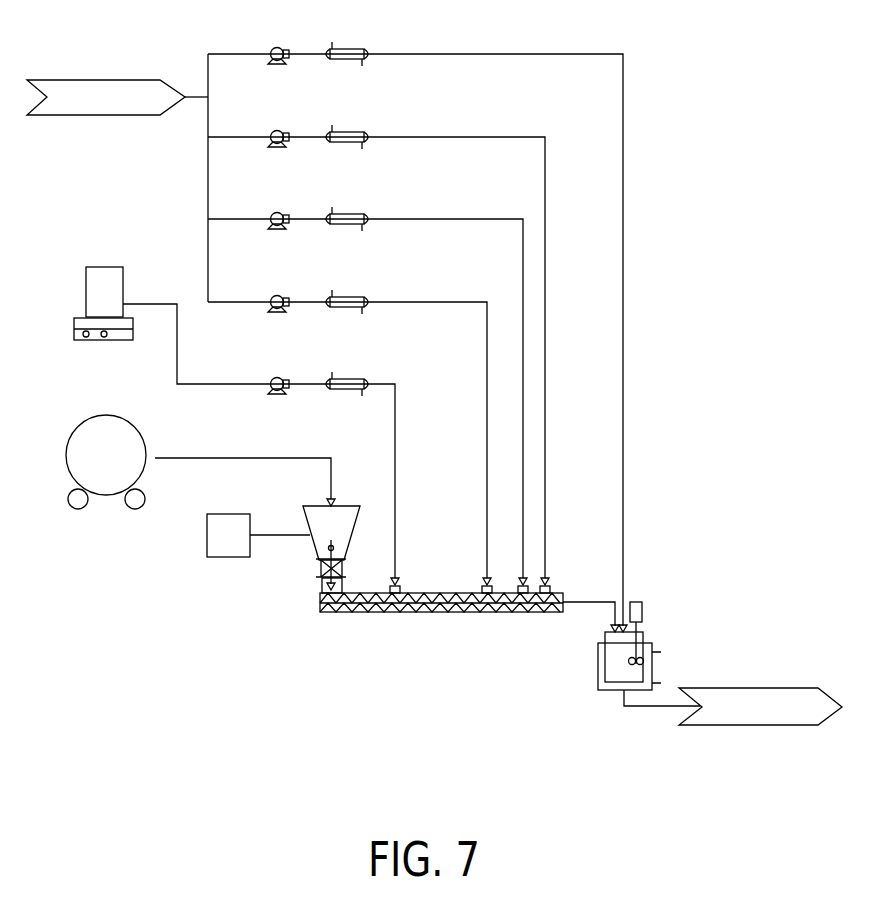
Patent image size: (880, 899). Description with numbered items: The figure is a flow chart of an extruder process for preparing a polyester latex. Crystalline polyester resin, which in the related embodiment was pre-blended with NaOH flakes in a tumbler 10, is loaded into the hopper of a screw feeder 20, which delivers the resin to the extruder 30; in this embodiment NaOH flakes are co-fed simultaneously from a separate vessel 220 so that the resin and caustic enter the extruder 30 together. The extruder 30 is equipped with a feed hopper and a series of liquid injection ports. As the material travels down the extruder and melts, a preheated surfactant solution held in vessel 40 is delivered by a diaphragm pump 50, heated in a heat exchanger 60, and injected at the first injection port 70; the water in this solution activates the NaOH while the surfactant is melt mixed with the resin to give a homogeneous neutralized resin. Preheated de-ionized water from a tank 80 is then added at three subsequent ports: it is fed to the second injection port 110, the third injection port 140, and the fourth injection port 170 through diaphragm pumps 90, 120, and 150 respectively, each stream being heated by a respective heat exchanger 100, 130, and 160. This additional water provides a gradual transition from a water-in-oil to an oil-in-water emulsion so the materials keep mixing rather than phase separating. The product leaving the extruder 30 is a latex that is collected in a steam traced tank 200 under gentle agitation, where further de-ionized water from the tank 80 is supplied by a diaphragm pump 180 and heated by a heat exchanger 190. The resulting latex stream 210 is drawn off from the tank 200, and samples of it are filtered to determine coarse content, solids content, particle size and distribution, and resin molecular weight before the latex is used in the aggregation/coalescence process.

The tumbler 10 is at (106, 497).
The screw feeder 20 is at (327, 549).
The extruder 30 is at (196, 662).
The vessel 40 is at (104, 344).
The diaphragm pump 50 is at (285, 376).
The heat exchanger 60 is at (352, 376).
The first injection port 70 is at (394, 578).
The tank 80 is at (101, 118).
The diaphragm pump 90 is at (285, 294).
The heat exchanger 100 is at (352, 294).
The second injection port 110 is at (483, 578).
The diaphragm pump 120 is at (285, 211).
The heat exchanger 130 is at (352, 211).
The third injection port 140 is at (521, 578).
The diaphragm pump 150 is at (285, 129).
The heat exchanger 160 is at (352, 129).
The fourth injection port 170 is at (550, 578).
The diaphragm pump 180 is at (285, 46).
The heat exchanger 190 is at (352, 46).
The steam traced tank 200 is at (645, 636).
The latex stream 210 is at (772, 688).
The vessel 220 is at (207, 536).